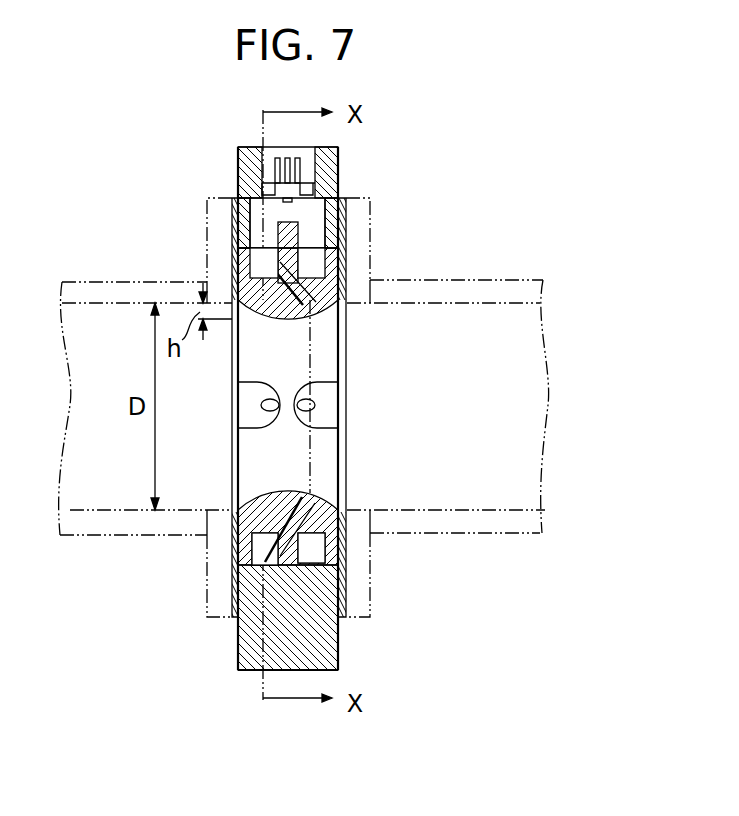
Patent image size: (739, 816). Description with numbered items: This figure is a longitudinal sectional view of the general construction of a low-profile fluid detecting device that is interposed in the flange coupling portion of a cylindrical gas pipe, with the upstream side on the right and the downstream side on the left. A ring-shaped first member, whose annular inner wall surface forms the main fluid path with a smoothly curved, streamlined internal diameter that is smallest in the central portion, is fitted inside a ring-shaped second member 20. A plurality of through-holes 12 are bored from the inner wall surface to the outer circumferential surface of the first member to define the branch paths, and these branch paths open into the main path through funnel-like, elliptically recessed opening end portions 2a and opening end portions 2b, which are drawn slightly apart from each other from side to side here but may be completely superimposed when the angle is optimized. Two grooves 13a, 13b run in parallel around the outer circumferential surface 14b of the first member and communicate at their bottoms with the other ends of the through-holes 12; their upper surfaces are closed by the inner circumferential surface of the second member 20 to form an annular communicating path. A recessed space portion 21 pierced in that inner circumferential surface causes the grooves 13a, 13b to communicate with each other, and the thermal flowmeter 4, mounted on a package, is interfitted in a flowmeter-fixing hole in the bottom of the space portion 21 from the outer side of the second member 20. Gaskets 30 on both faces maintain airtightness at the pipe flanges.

The opening end portion 2a is at (318, 320).
The opening end portion 2b is at (263, 323).
The thermal flowmeter 4 is at (300, 191).
The through-hole 12 is at (347, 275).
The groove 13a is at (256, 264).
The groove 13b is at (320, 262).
The outer circumferential surface 14b is at (300, 605).
The second member 20 is at (238, 152).
The recessed space portion 21 is at (282, 213).
The gasket 30 is at (234, 593).